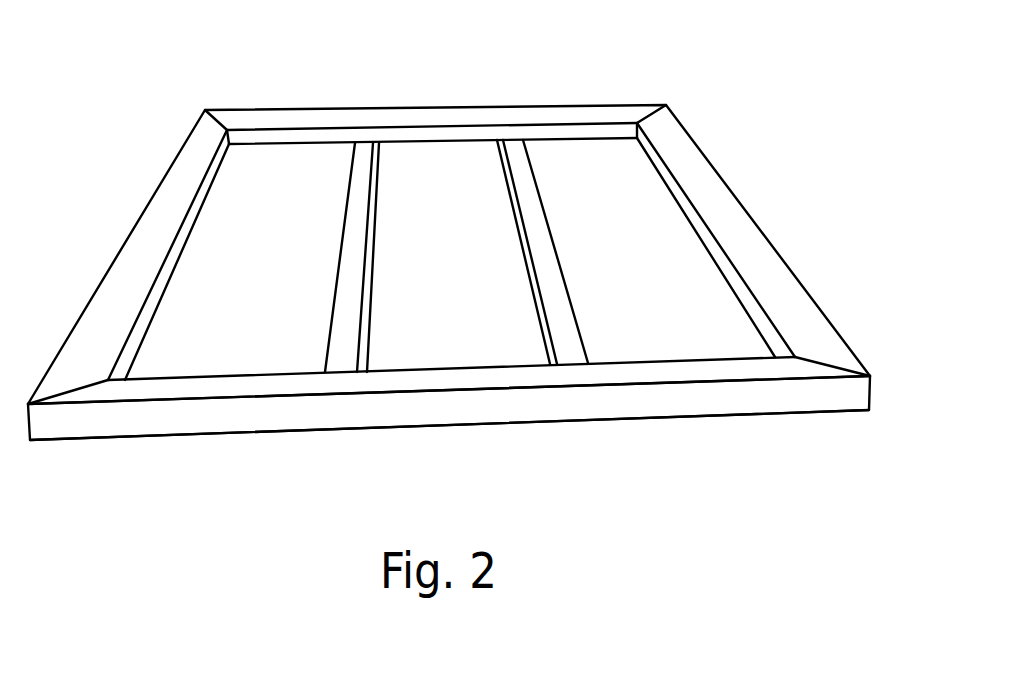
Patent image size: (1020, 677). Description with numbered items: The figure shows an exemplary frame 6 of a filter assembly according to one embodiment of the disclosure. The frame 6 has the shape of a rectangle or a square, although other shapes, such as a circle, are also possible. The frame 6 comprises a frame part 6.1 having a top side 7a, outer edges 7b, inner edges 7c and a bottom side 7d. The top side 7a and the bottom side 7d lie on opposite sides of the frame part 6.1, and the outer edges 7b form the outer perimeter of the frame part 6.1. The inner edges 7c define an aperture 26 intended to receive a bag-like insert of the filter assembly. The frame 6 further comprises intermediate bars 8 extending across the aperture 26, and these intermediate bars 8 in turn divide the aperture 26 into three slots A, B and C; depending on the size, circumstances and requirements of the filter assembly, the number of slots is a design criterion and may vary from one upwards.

The frame 6 is at (757, 193).
The frame part 6.1 is at (570, 115).
The top side 7a is at (183, 181).
The outer edges 7b is at (225, 422).
The inner edges 7c is at (660, 168).
The bottom side 7d is at (585, 420).
The intermediate bars 8 is at (565, 328).
The aperture 26 is at (437, 197).